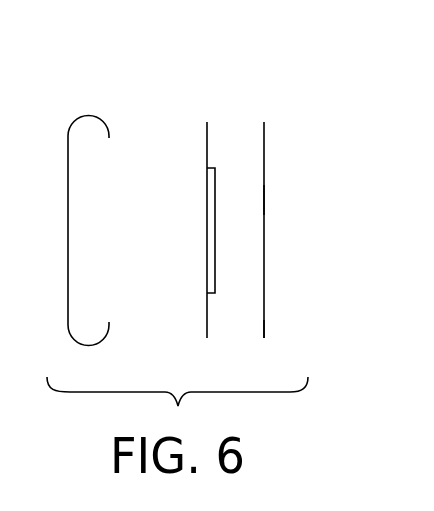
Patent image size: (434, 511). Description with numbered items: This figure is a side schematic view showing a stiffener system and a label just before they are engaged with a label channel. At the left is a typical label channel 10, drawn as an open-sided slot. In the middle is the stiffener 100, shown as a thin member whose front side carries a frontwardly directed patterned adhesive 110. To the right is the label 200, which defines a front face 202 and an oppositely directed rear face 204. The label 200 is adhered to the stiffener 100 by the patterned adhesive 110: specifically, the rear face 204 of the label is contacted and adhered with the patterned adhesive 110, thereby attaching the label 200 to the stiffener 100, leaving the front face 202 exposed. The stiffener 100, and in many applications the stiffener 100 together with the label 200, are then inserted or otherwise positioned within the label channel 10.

The label channel 10 is at (90, 115).
The stiffener 100 is at (207, 110).
The patterned adhesive 110 is at (218, 222).
The label 200 is at (274, 110).
The front face 202 is at (264, 200).
The rear face 204 is at (264, 325).